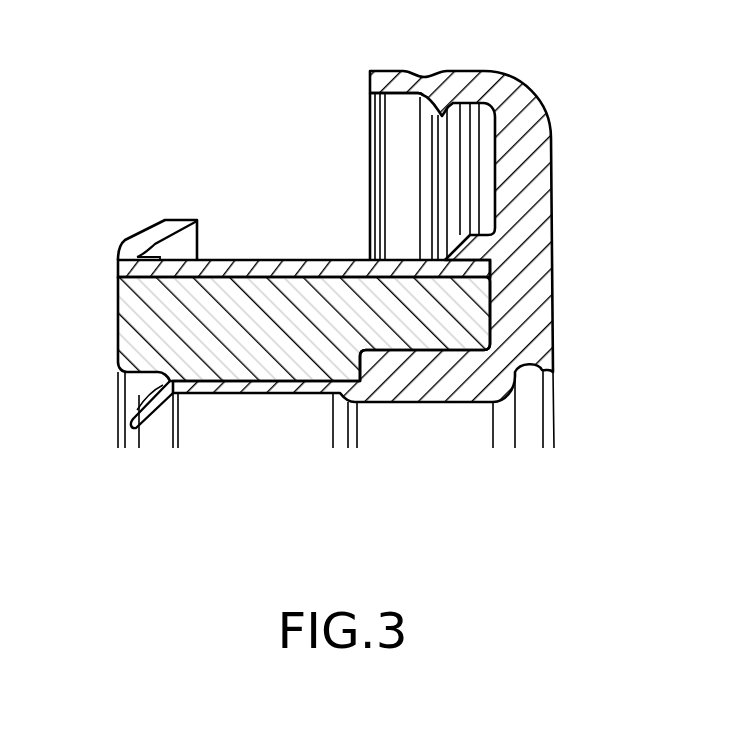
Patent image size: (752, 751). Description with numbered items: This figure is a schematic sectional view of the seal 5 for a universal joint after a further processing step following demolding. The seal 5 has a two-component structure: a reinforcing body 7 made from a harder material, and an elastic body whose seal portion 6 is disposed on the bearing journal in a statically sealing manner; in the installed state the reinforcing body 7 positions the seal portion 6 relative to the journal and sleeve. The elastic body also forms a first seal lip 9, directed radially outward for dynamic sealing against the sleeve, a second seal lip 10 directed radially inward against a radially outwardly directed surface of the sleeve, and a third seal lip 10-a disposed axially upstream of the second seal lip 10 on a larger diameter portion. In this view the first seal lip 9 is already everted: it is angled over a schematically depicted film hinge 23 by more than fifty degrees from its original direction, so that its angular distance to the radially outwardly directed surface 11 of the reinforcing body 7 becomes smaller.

The seal 5 is at (572, 102).
The seal portion 6 is at (430, 394).
The reinforcing body 7 is at (267, 342).
The first seal lip 9 is at (151, 231).
The second seal lip 10 is at (443, 116).
The third seal lip 10-a is at (377, 94).
The radially outwardly directed surface 11 is at (297, 269).
The film hinge 23 is at (136, 257).